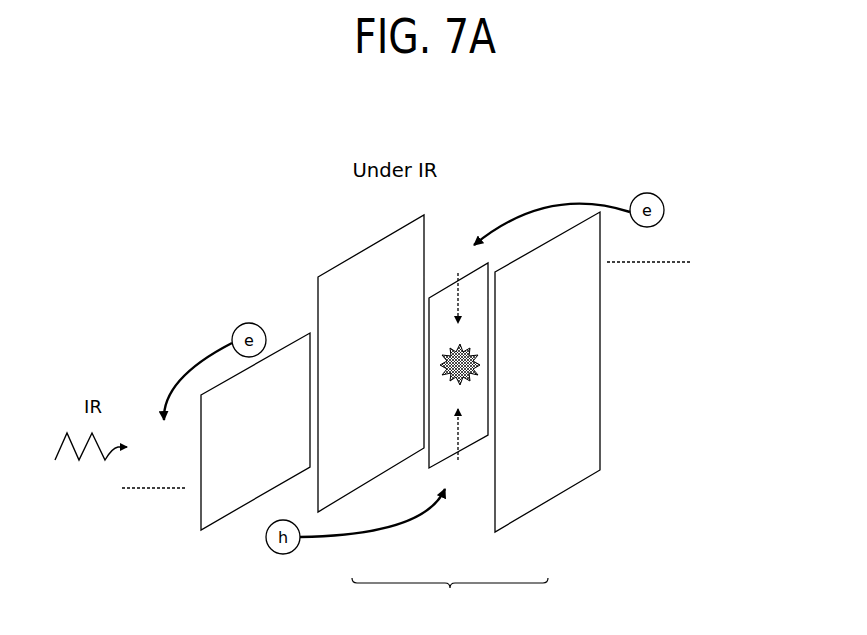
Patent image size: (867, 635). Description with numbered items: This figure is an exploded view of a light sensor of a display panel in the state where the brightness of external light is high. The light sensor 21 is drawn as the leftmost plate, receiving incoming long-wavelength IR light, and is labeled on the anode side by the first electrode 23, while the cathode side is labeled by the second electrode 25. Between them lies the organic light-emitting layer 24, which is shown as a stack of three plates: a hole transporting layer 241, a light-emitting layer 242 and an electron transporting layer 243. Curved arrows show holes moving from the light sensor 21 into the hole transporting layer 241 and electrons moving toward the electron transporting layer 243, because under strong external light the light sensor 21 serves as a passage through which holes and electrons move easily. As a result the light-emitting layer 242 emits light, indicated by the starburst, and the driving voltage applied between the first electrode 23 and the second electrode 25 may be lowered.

The light sensor 21 is at (245, 487).
The first electrode 23 is at (158, 518).
The organic light-emitting layer 24 is at (450, 596).
The hole transporting layer 241 is at (388, 418).
The light-emitting layer 242 is at (475, 428).
The electron transporting layer 243 is at (545, 483).
The second electrode 25 is at (650, 290).